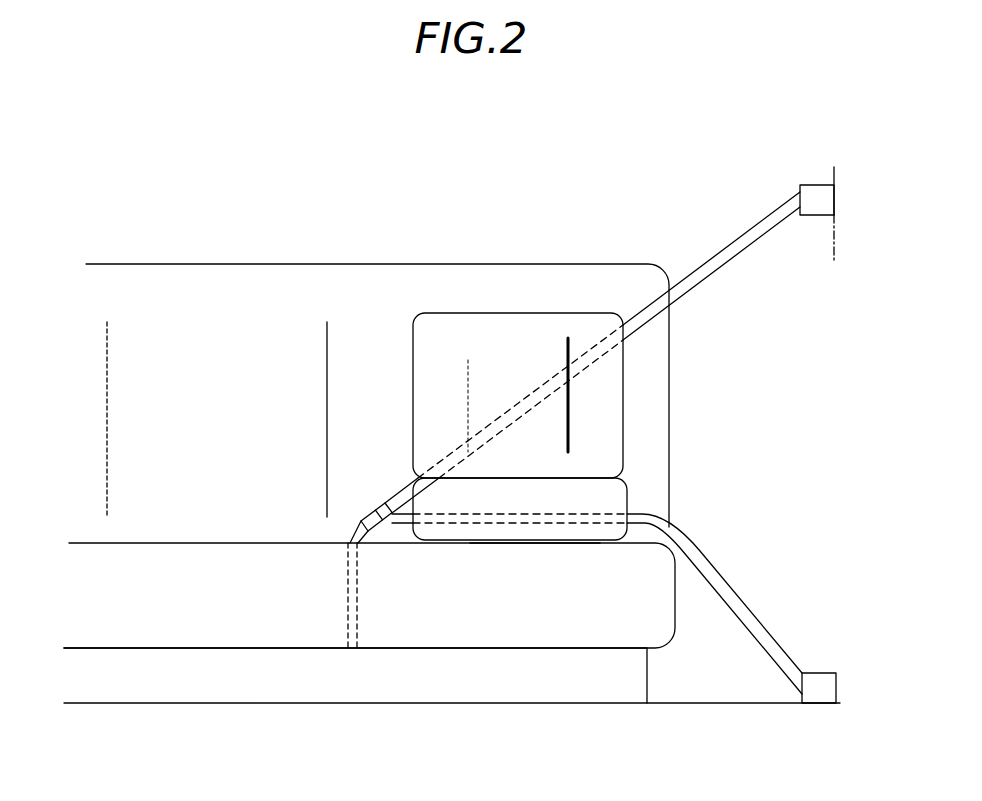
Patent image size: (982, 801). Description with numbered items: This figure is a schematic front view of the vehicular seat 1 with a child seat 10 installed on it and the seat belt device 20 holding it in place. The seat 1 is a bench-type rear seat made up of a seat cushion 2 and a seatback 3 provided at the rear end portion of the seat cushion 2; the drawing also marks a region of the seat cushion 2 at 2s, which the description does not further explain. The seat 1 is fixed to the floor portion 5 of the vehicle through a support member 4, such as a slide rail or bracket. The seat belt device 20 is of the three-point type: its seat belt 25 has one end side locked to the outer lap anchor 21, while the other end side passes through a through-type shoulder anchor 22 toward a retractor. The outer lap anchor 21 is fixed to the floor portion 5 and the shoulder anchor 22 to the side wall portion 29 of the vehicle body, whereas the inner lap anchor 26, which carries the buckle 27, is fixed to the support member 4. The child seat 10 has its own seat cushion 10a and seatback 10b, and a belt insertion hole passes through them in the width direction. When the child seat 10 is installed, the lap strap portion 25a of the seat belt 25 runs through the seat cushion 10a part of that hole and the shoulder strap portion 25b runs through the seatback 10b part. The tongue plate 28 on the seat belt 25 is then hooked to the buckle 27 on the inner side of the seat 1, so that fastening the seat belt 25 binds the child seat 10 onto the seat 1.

The vehicular seat 1 is at (208, 263).
The seat cushion 2 is at (152, 560).
The seating surface 2s is at (524, 544).
The seatback 3 is at (660, 393).
The support member 4 is at (648, 660).
The floor portion 5 is at (698, 702).
The child seat 10 is at (538, 385).
The seat cushion of child seat 10a is at (613, 502).
The seatback of child seat 10b is at (413, 380).
The seat belt device 20 is at (308, 433).
The outer lap anchor 21 is at (815, 672).
The shoulder anchor 22 is at (800, 186).
The seat belt 25 is at (600, 443).
The lap strap portion 25a is at (737, 598).
The shoulder strap portion 25b is at (726, 250).
The inner lap anchor 26 is at (346, 531).
The buckle 27 is at (362, 545).
The tongue plate 28 is at (373, 511).
The side wall portion 29 is at (832, 242).